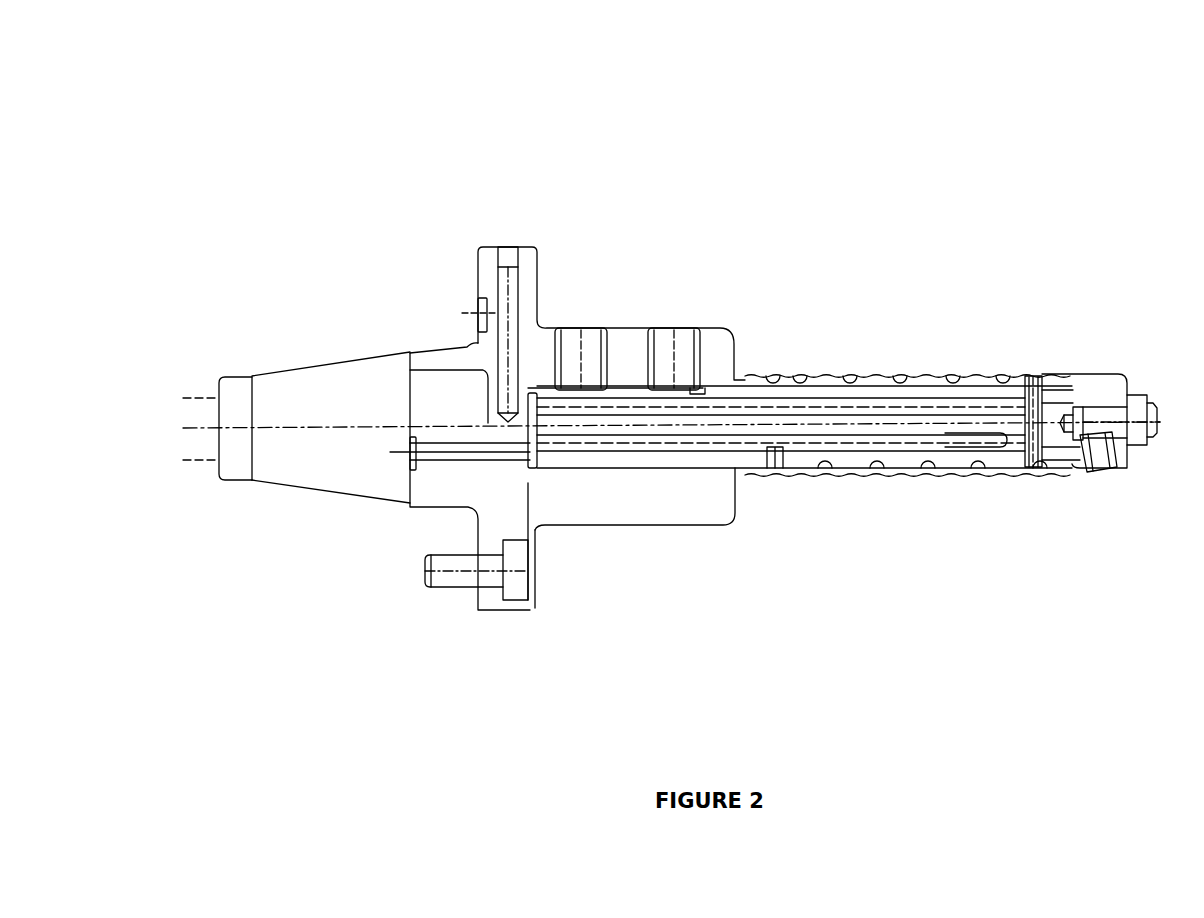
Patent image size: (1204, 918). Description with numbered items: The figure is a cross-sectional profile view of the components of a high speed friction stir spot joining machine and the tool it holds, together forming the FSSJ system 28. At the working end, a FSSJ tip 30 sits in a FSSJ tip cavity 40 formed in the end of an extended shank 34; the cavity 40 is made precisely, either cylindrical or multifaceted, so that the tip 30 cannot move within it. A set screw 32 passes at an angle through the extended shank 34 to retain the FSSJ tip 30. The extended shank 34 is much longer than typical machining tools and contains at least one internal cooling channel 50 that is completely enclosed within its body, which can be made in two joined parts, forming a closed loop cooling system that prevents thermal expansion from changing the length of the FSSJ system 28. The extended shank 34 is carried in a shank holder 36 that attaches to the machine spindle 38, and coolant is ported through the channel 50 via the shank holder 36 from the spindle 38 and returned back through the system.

The FSSJ system 28 is at (803, 203).
The FSSJ tip 30 is at (1083, 400).
The set screw 32 is at (1087, 470).
The extended shank 34 is at (550, 350).
The shank holder 36 is at (735, 603).
The spindle 38 is at (407, 338).
The FSSJ tip cavity 40 is at (1062, 426).
The internal cooling channel 50 is at (922, 405).